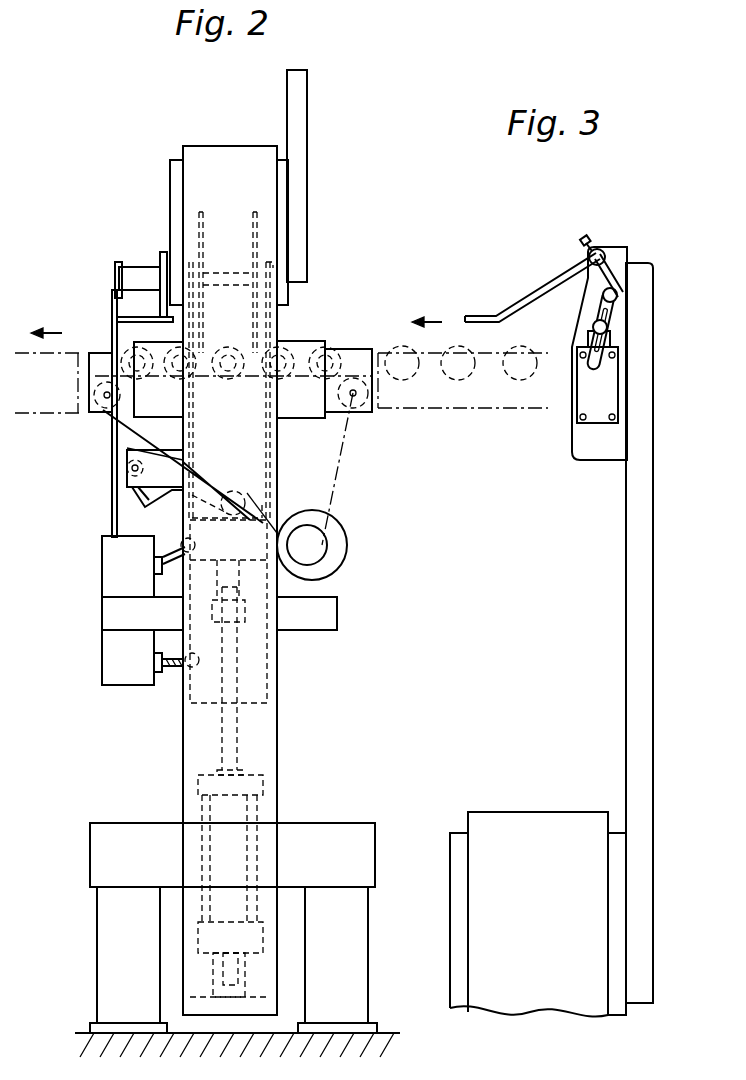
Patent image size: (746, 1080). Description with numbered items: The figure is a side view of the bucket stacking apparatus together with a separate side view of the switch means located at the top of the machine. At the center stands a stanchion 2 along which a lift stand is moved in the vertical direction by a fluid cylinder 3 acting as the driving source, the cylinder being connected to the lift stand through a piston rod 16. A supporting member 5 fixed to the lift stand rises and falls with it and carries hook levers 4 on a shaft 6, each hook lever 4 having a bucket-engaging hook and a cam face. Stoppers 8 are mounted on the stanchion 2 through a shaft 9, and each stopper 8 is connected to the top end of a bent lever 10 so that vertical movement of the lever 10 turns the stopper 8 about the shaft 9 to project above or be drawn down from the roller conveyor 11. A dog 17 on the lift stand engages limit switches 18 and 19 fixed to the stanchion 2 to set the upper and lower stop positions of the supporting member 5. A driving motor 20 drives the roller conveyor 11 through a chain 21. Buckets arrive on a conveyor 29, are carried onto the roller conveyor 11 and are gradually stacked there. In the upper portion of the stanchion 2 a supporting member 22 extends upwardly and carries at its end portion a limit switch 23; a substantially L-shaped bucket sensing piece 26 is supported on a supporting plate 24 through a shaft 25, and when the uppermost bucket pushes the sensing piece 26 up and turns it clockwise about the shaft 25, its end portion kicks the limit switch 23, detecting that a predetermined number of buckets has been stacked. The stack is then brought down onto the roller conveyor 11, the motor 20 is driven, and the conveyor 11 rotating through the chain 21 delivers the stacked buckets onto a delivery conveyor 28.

In FIG. 2, the stanchion 2 is at (218, 155).
In FIG. 3, the stanchion 2 is at (532, 926).
In FIG. 2, the fluid cylinder 3 is at (243, 810).
In FIG. 2, the hook lever 4 is at (258, 220).
In FIG. 2, the supporting member 5 is at (278, 456).
In FIG. 2, the shaft 6 is at (244, 273).
In FIG. 2, the stopper 8 is at (163, 252).
In FIG. 2, the shaft 9 is at (130, 267).
In FIG. 2, the bent lever 10 is at (112, 332).
In FIG. 2, the roller conveyor 11 is at (357, 350).
In FIG. 2, the piston rod 16 is at (240, 722).
In FIG. 2, the dog 17 is at (187, 573).
In FIG. 2, the limit switch 18 is at (153, 545).
In FIG. 2, the limit switch 19 is at (173, 672).
In FIG. 2, the driving motor 20 is at (338, 563).
In FIG. 2, the chain 21 is at (345, 492).
In FIG. 3, the supporting member 22 is at (643, 660).
In FIG. 3, the limit switch 23 is at (610, 375).
In FIG. 3, the supporting plate 24 is at (620, 258).
In FIG. 3, the shaft 25 is at (598, 249).
In FIG. 3, the bucket sensing piece 26 is at (535, 292).
In FIG. 2, the delivery conveyor 28 is at (38, 418).
In FIG. 2, the conveyor 29 is at (522, 412).